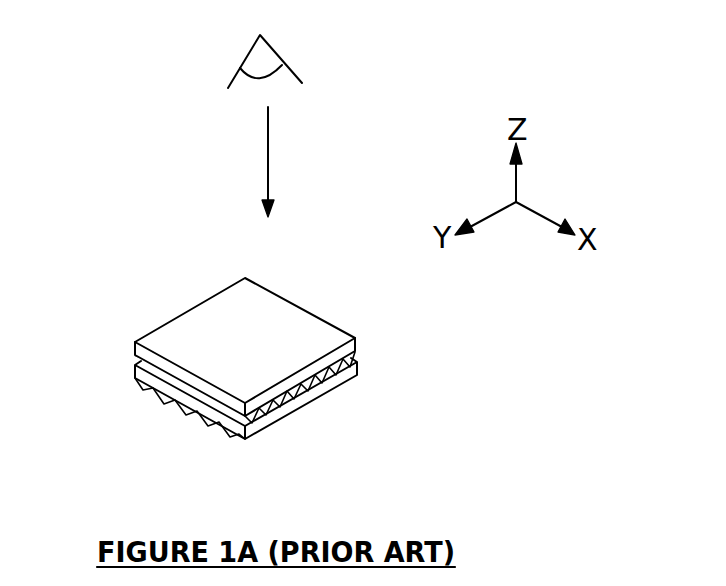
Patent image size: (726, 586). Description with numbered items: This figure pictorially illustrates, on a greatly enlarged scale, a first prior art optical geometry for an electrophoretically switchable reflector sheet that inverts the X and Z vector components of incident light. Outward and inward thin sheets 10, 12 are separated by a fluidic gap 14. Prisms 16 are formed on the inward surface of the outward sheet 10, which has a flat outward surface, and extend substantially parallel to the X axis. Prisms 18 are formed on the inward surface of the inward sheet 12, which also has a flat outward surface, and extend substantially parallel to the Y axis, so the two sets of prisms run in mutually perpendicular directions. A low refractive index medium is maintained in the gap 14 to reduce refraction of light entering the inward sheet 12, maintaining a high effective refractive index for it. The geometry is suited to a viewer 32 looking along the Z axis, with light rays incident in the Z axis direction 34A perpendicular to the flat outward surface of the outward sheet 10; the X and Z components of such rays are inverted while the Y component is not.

The outward thin sheet 10 is at (133, 343).
The inward thin sheet 12 is at (357, 365).
The fluidic gap 14 is at (121, 357).
The prisms 16 is at (312, 384).
The prisms 18 is at (155, 388).
The viewer 32 is at (278, 53).
The Z axis direction 34A is at (266, 165).